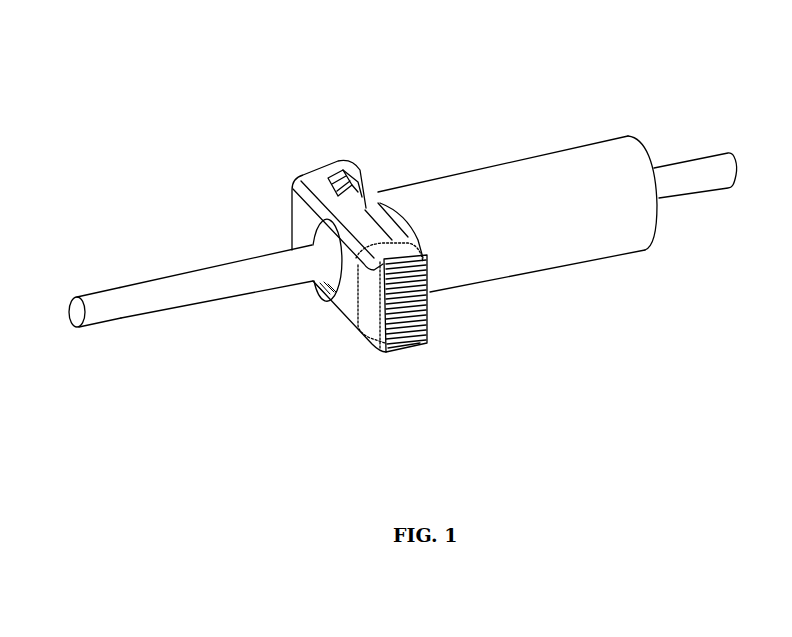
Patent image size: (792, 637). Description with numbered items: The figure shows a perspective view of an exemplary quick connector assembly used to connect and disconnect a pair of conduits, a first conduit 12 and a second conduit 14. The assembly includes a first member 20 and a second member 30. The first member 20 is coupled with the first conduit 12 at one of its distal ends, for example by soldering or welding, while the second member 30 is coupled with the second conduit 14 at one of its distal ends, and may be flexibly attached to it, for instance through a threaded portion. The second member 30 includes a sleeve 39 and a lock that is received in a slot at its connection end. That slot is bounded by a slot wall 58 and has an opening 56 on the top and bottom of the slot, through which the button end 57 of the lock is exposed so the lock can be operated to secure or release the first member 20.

The first conduit 12 is at (97, 288).
The first member 20 is at (216, 302).
The slot wall 58 is at (328, 175).
The opening 56 is at (360, 184).
The button end 57 is at (410, 332).
The second member 30 is at (492, 183).
The sleeve 39 is at (534, 253).
The second conduit 14 is at (711, 146).